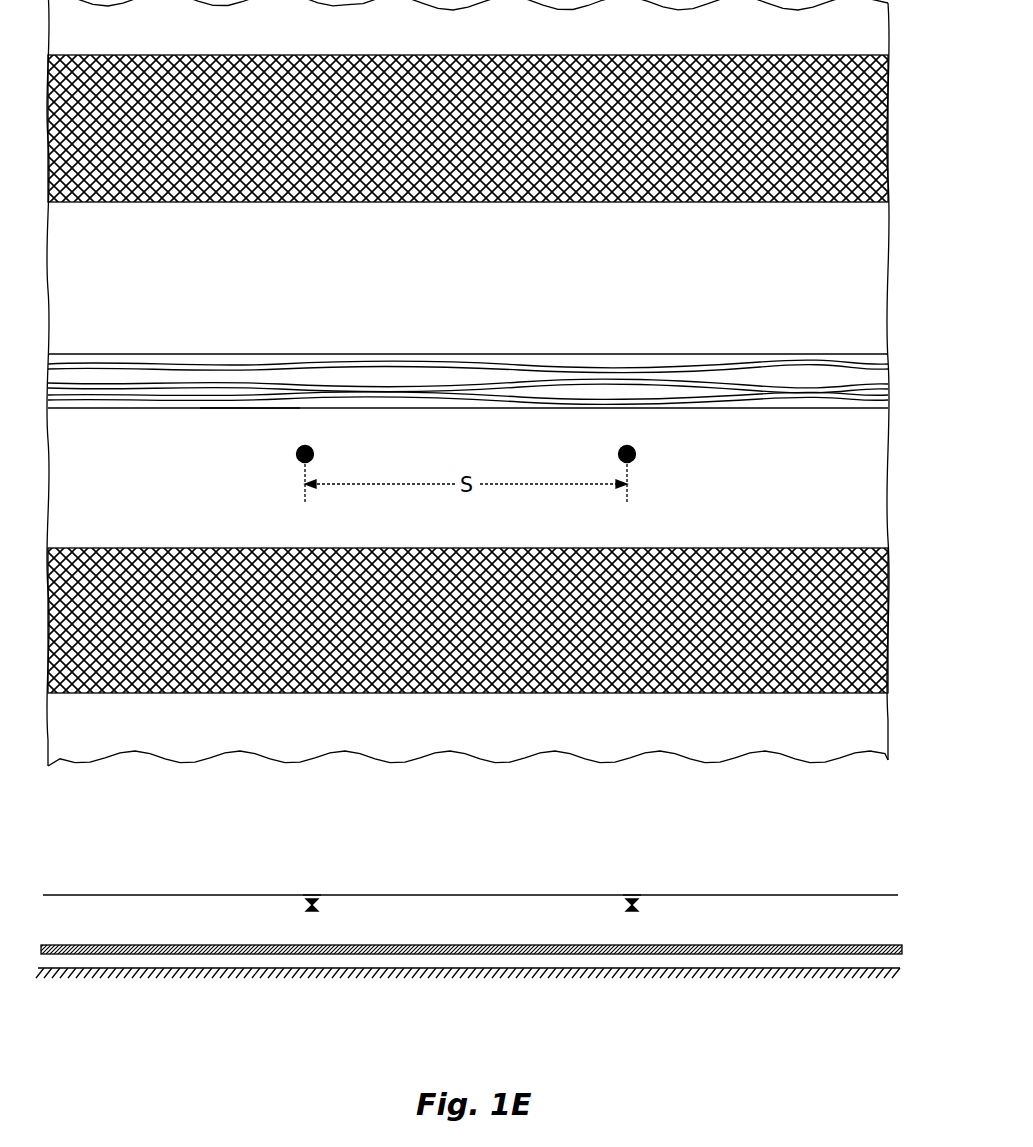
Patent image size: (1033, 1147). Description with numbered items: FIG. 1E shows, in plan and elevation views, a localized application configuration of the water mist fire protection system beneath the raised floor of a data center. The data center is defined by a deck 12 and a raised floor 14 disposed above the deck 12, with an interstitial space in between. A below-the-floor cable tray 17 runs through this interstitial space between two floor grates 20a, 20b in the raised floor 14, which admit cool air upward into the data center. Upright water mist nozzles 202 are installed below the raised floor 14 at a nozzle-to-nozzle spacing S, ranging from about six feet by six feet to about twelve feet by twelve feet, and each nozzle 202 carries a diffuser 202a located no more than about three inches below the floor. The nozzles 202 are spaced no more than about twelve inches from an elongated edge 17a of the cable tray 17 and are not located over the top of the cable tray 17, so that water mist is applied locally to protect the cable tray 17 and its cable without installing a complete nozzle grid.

The deck 12 is at (888, 967).
The raised floor 14 is at (843, 733).
The below-the-floor cable tray 17 is at (178, 410).
The elongated edge of cable tray 17a is at (240, 410).
The floor grate 20a is at (805, 183).
The floor grate 20b is at (815, 550).
The nozzle 202 is at (309, 447).
The diffuser 202a is at (312, 897).